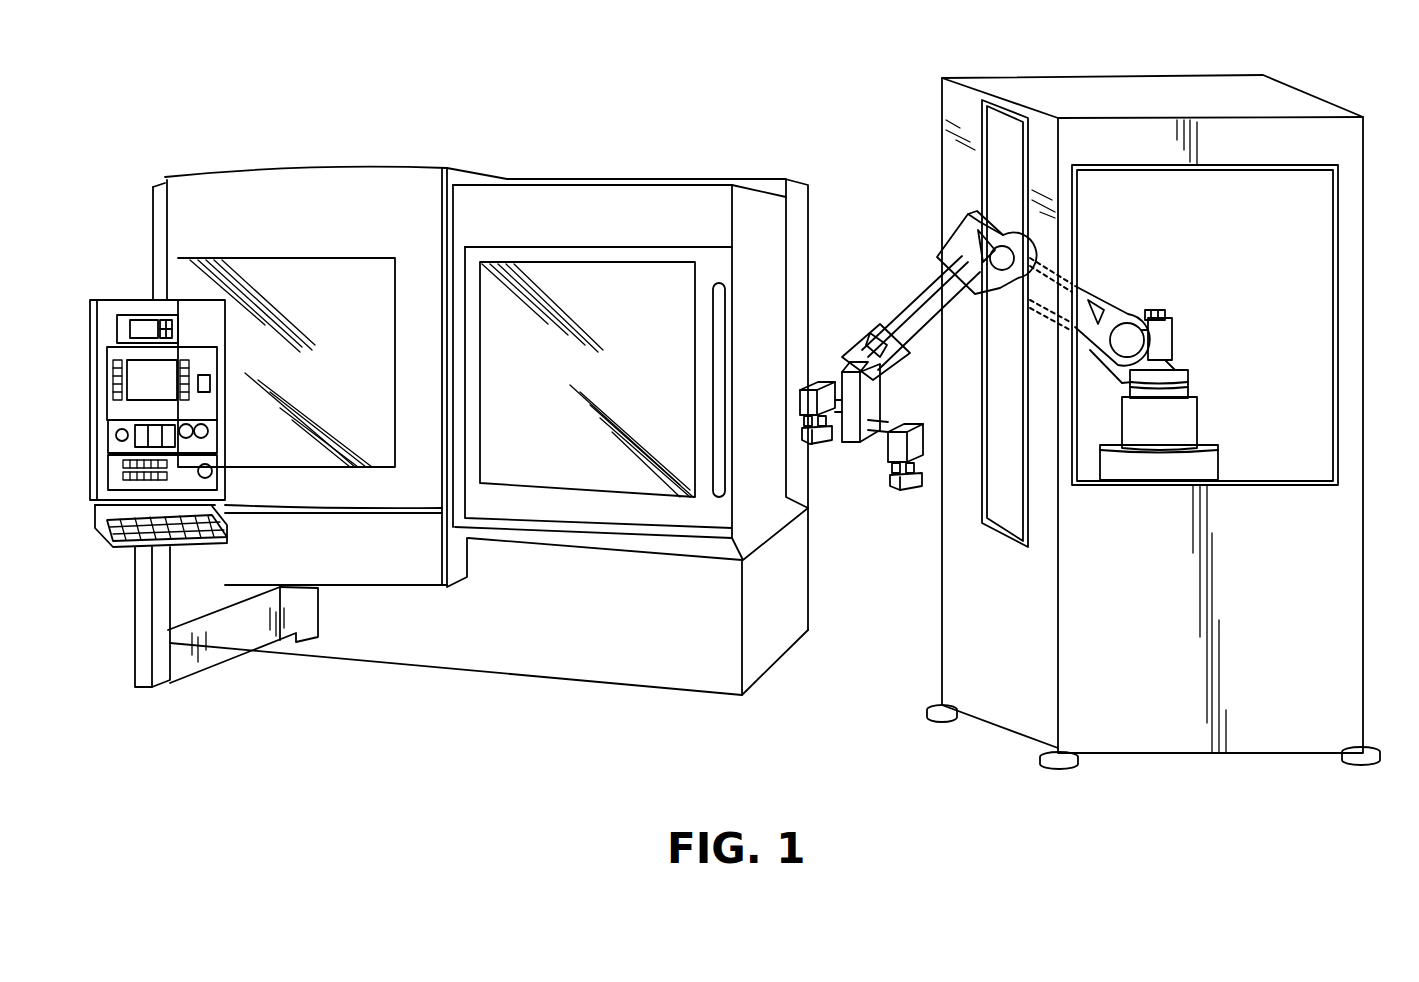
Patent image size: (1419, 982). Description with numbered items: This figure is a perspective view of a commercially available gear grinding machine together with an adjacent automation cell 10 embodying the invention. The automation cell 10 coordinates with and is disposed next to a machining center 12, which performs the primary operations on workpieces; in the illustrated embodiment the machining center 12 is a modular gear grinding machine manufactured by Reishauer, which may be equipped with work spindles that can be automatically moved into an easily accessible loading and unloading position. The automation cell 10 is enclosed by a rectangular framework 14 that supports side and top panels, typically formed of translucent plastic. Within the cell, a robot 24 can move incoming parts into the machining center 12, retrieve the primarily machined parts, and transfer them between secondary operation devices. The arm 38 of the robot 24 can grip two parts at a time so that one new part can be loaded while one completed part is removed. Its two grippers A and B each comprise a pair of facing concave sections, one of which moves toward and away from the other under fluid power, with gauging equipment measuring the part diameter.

The automation cell 10 is at (1310, 76).
The machining center 12 is at (615, 156).
The rectangular framework 14 is at (1323, 587).
The robot 24 is at (1090, 273).
The arm 38 is at (902, 300).
The gripper A is at (824, 442).
The gripper B is at (912, 487).